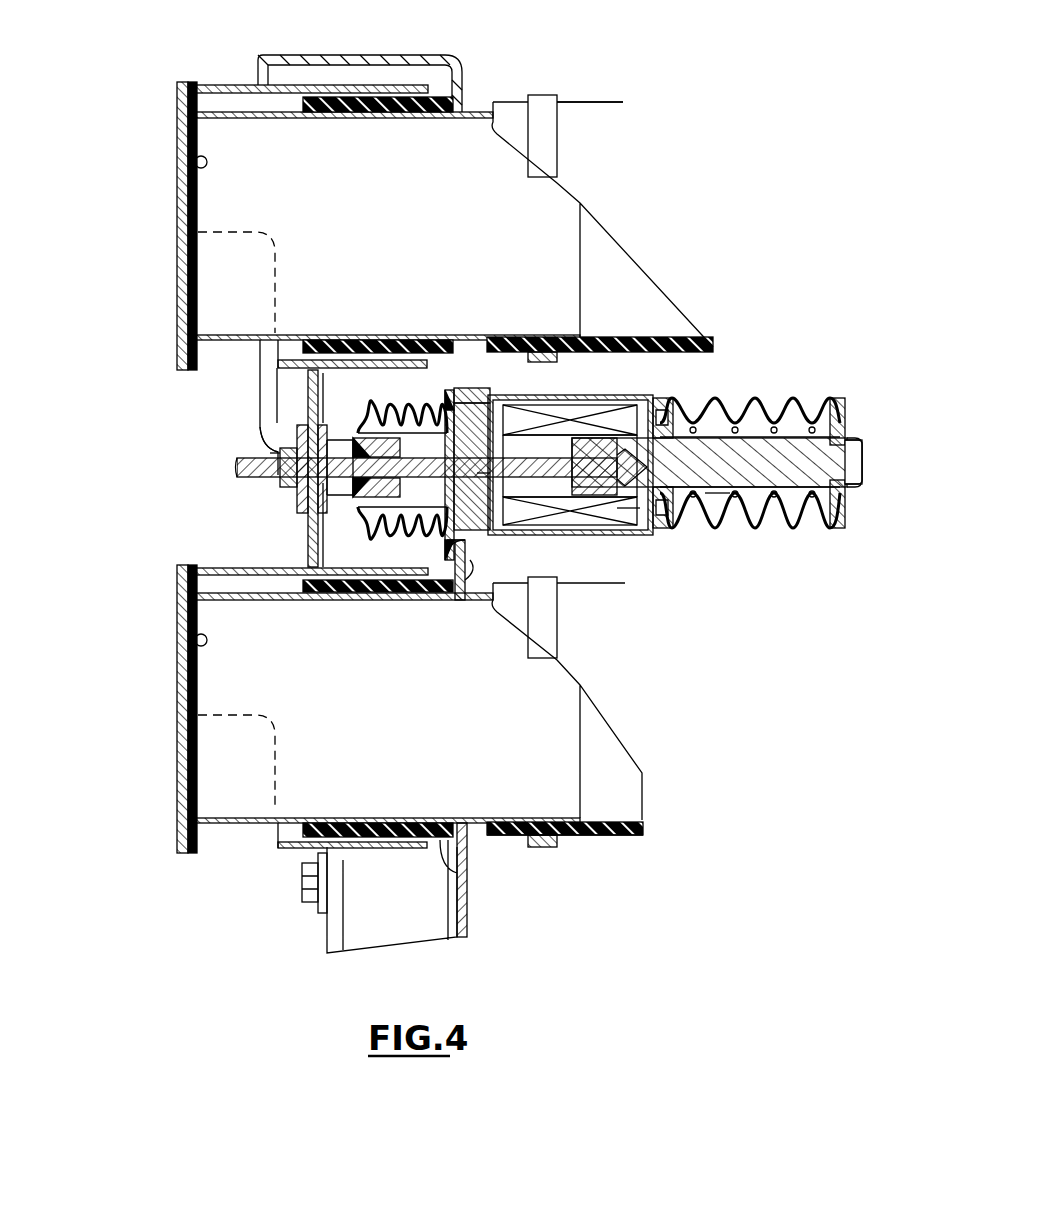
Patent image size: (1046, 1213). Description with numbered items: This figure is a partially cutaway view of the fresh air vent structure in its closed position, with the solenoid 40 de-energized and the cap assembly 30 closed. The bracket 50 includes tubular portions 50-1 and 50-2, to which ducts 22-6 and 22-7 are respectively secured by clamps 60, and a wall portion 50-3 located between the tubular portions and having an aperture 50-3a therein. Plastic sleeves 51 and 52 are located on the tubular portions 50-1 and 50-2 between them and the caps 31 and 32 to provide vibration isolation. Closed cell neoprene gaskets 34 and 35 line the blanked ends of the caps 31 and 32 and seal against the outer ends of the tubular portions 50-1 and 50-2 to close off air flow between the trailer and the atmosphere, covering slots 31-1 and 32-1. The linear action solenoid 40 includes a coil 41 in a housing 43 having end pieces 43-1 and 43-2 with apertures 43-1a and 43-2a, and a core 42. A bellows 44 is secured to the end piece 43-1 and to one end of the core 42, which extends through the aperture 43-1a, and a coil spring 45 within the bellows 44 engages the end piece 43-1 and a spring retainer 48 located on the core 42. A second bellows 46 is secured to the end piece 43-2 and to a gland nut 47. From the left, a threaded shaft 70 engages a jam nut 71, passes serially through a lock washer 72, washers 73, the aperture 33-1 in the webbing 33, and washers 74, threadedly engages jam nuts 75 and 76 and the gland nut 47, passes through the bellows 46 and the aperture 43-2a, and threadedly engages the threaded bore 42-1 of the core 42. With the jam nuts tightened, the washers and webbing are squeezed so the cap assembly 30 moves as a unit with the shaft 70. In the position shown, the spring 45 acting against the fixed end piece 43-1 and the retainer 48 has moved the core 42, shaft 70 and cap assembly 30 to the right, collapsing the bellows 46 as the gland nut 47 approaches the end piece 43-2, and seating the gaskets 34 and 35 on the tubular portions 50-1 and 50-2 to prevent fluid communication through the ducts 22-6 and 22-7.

The cap assembly 30 is at (117, 452).
The cap 31 is at (177, 263).
The slot 31-1 is at (225, 350).
The cap 32 is at (177, 750).
The slot 32-1 is at (237, 843).
The webbing 33 is at (307, 527).
The aperture 33-1 is at (270, 453).
The gasket 34 is at (195, 163).
The gasket 35 is at (195, 645).
The linear action solenoid 40 is at (790, 347).
The coil 41 is at (617, 508).
The core 42 is at (667, 462).
The threaded bore 42-1 is at (640, 463).
The housing 43 is at (603, 396).
The end piece 43-1 is at (657, 412).
The aperture 43-1a is at (717, 497).
The end piece 43-2 is at (488, 396).
The aperture 43-2a is at (477, 473).
The bellows 44 is at (760, 413).
The coil spring 45 is at (810, 413).
The bellows 46 is at (453, 392).
The gland nut 47 is at (430, 415).
The spring retainer 48 is at (843, 487).
The bracket 50 is at (465, 917).
The tubular portion 50-1 is at (580, 280).
The tubular portion 50-2 is at (580, 760).
The wall portion 50-3 is at (480, 577).
The aperture 50-3a is at (455, 540).
The plastic sleeve 51 is at (377, 107).
The plastic sleeve 52 is at (465, 882).
The clamp 60 is at (550, 122).
The duct 22-6 is at (623, 102).
The duct 22-7 is at (593, 835).
The threaded shaft 70 is at (237, 463).
The jam nut 71 is at (293, 485).
The lock washer 72 is at (298, 508).
The washers 73 is at (293, 497).
The washers 74 is at (307, 405).
The jam nut 75 is at (332, 442).
The jam nut 76 is at (380, 520).